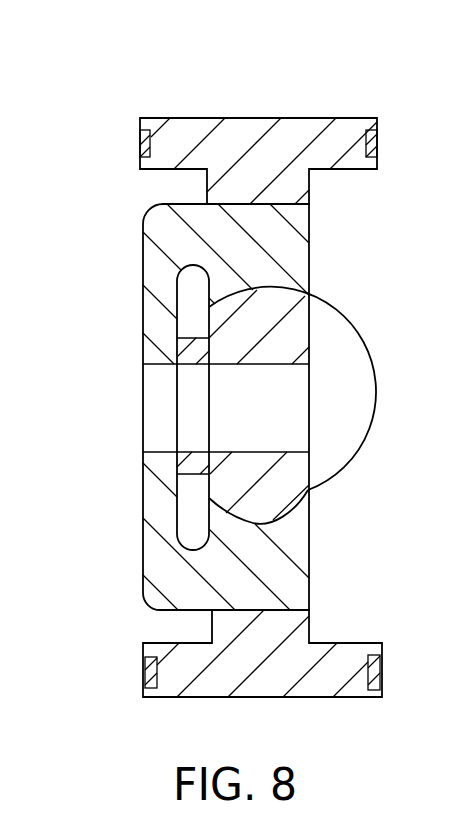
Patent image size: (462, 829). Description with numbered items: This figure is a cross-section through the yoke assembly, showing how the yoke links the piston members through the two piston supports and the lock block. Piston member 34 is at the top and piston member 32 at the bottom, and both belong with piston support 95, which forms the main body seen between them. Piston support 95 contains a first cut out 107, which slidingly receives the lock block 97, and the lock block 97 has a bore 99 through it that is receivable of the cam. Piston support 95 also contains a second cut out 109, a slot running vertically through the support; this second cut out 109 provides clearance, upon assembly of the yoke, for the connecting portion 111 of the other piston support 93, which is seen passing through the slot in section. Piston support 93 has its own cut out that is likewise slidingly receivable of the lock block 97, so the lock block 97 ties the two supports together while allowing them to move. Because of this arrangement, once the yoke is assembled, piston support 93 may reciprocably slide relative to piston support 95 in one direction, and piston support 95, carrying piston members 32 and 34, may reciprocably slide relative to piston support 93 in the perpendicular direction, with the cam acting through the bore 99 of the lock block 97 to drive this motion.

The piston member 34 is at (222, 118).
The piston member 32 is at (247, 698).
The piston support 95 is at (143, 568).
The second cut out 109 is at (186, 266).
The connecting portion 111 is at (195, 368).
The piston support 93 is at (197, 477).
The bore 99 is at (275, 367).
The first cut out 107 is at (262, 289).
The lock block 97 is at (310, 474).